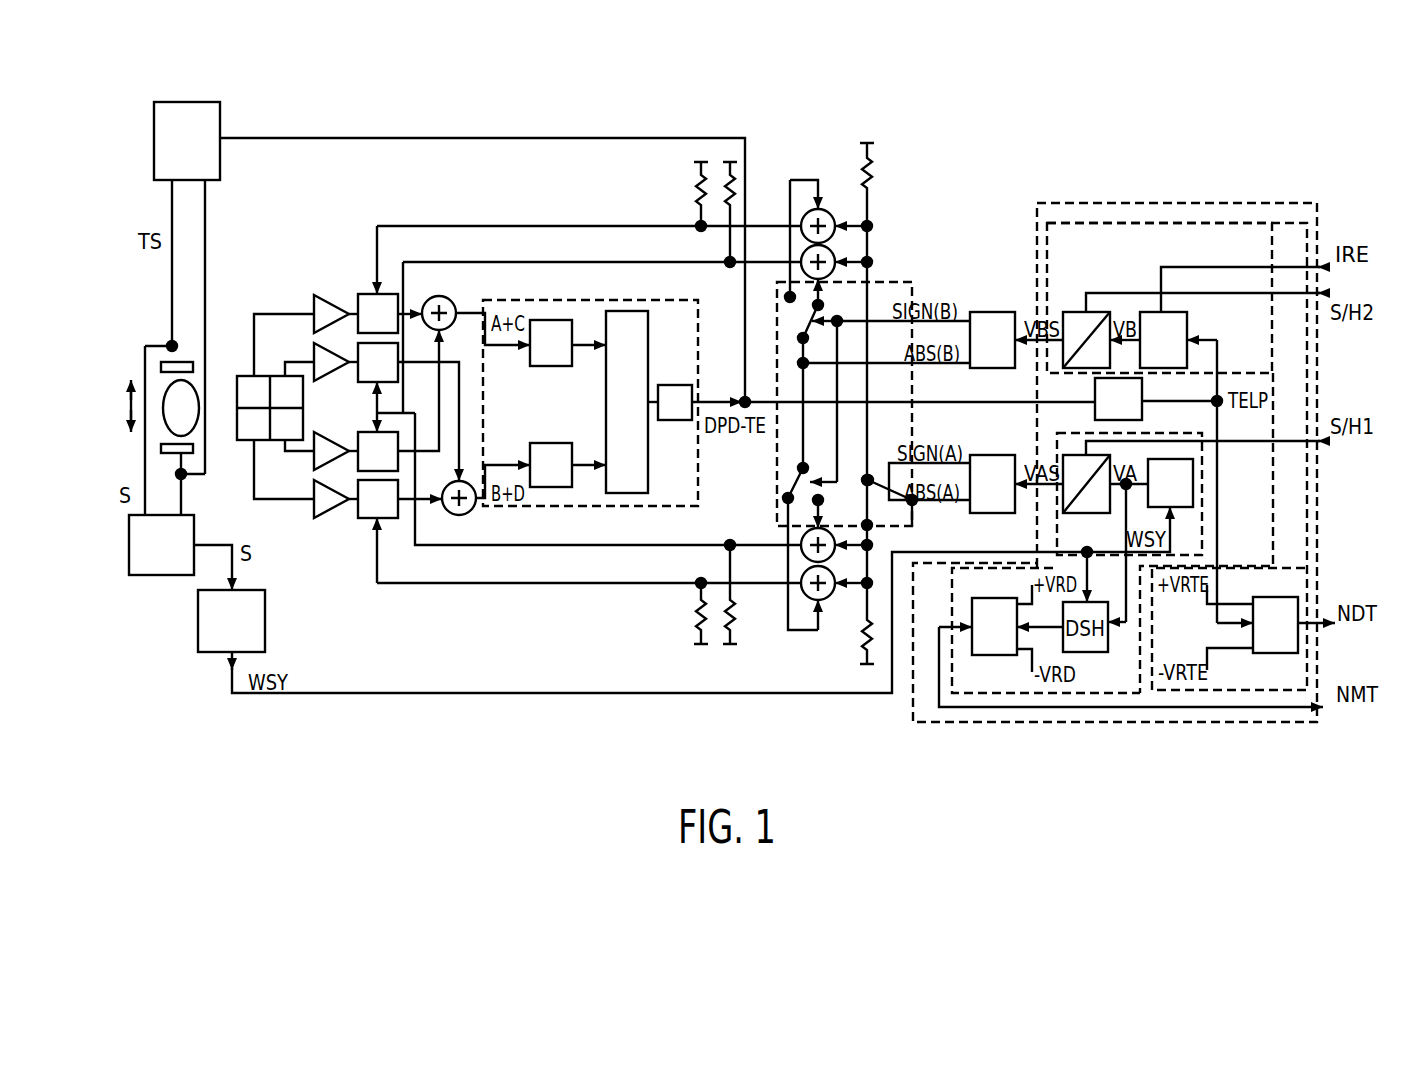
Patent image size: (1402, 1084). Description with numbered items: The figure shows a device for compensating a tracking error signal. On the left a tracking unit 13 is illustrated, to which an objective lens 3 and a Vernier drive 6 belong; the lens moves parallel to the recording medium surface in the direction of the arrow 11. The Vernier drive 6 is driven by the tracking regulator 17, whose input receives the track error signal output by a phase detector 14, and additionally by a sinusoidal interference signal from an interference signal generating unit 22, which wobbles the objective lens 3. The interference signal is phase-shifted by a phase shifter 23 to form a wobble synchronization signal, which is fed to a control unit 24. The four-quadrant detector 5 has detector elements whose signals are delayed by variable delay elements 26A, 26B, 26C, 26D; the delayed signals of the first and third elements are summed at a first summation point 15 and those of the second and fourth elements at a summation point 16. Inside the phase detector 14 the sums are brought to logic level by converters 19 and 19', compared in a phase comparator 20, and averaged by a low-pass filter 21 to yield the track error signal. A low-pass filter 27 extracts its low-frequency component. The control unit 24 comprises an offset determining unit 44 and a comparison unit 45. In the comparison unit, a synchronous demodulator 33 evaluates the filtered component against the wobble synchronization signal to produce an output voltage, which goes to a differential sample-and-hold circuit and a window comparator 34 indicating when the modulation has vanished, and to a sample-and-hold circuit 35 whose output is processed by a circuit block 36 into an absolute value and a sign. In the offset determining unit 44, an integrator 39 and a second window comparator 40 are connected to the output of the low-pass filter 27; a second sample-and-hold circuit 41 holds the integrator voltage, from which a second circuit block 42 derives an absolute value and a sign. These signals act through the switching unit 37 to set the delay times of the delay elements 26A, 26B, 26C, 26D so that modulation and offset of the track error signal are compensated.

The objective lens 3 is at (190, 392).
The quadrant photodetector 5 is at (245, 441).
The Vernier drive 6 is at (158, 349).
The arrow 11 is at (126, 394).
The tracking unit 13 is at (106, 461).
The phase detector 14 is at (590, 300).
The first summation point 15 is at (439, 296).
The summation point 16 is at (459, 516).
The tracking regulator 17 is at (177, 153).
The converter 19 is at (551, 343).
The converter 19' is at (551, 465).
The phase comparator 20 is at (616, 413).
The low-pass filter 21 is at (664, 414).
The interference signal generating unit 22 is at (150, 558).
The phase shifter 23 is at (220, 634).
The control unit 24 is at (1055, 203).
The variable delay element 26A is at (361, 325).
The variable delay element 26B is at (361, 374).
The variable delay element 26C is at (361, 463).
The variable delay element 26D is at (361, 511).
The low-pass filter 27 is at (1107, 411).
The synchronous demodulator 33 is at (1159, 495).
The window comparator 34 is at (983, 640).
The sample-and-hold circuit 35 is at (1073, 455).
The circuit block 36 is at (981, 497).
The switching unit 37 is at (777, 492).
The integrator 39 is at (1152, 353).
The second window comparator 40 is at (1264, 637).
The second sample-and-hold circuit 41 is at (1075, 312).
The second circuit block 42 is at (981, 353).
The offset determining unit 44 is at (1133, 223).
The comparison unit 45 is at (1100, 696).